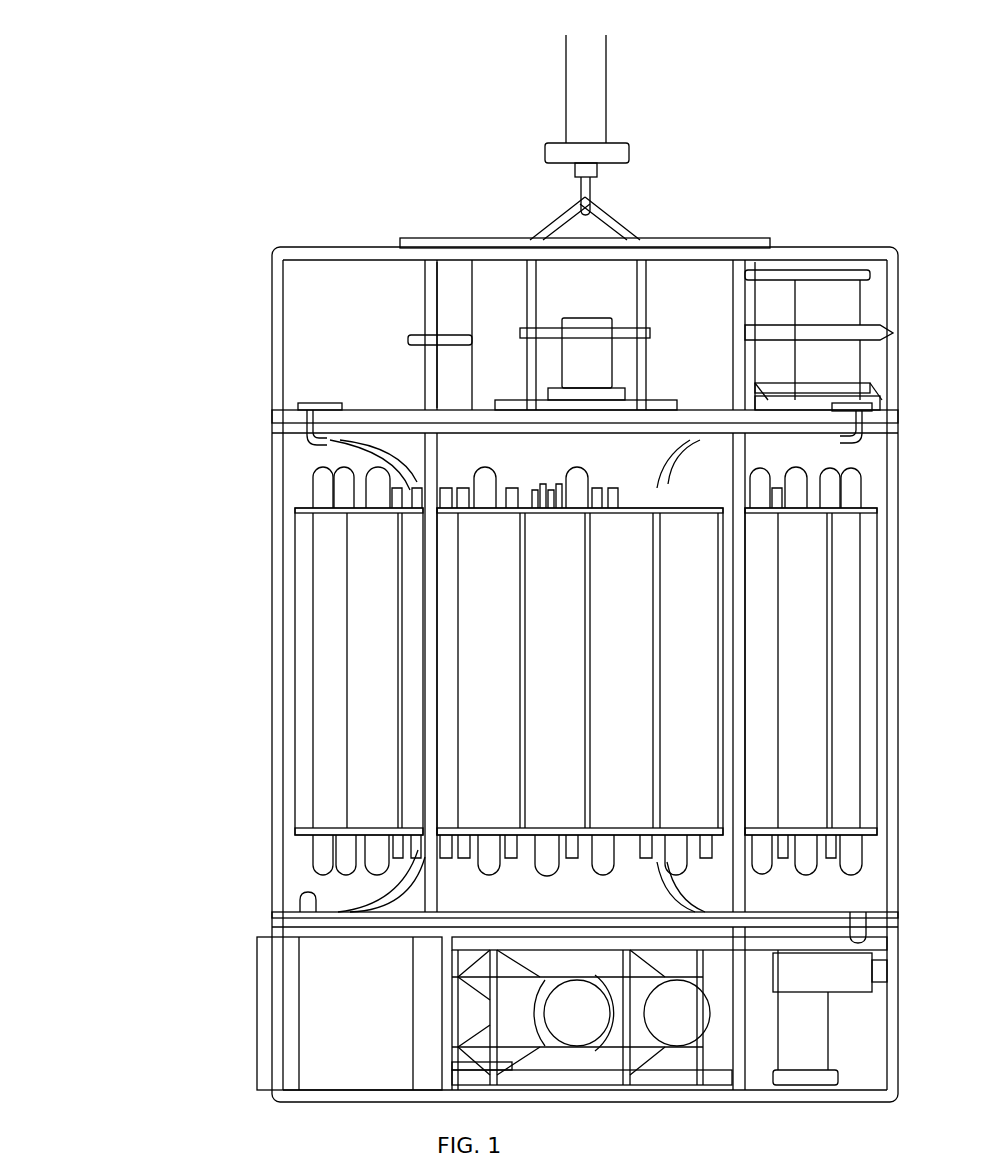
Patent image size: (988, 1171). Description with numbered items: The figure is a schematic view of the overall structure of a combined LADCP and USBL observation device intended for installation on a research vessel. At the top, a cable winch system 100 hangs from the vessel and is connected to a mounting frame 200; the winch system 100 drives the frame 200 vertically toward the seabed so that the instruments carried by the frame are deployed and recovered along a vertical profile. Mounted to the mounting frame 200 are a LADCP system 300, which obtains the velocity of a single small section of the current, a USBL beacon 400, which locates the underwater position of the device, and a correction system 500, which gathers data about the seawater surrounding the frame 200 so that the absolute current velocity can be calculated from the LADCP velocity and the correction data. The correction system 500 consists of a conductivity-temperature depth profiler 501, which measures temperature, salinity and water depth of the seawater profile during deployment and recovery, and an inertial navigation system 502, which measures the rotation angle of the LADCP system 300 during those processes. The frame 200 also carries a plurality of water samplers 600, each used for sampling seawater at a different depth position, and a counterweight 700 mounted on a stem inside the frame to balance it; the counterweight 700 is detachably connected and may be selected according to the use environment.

The cable winch system 100 is at (380, 137).
The mounting frame 200 is at (509, 605).
The LADCP system 300 is at (506, 332).
The USBL beacon 400 is at (296, 294).
The correction system 500 is at (456, 614).
The conductivity-temperature depth profiler 501 is at (271, 637).
The inertial navigation system 502 is at (398, 364).
The water sampler 600 is at (503, 780).
The counterweight 700 is at (281, 817).